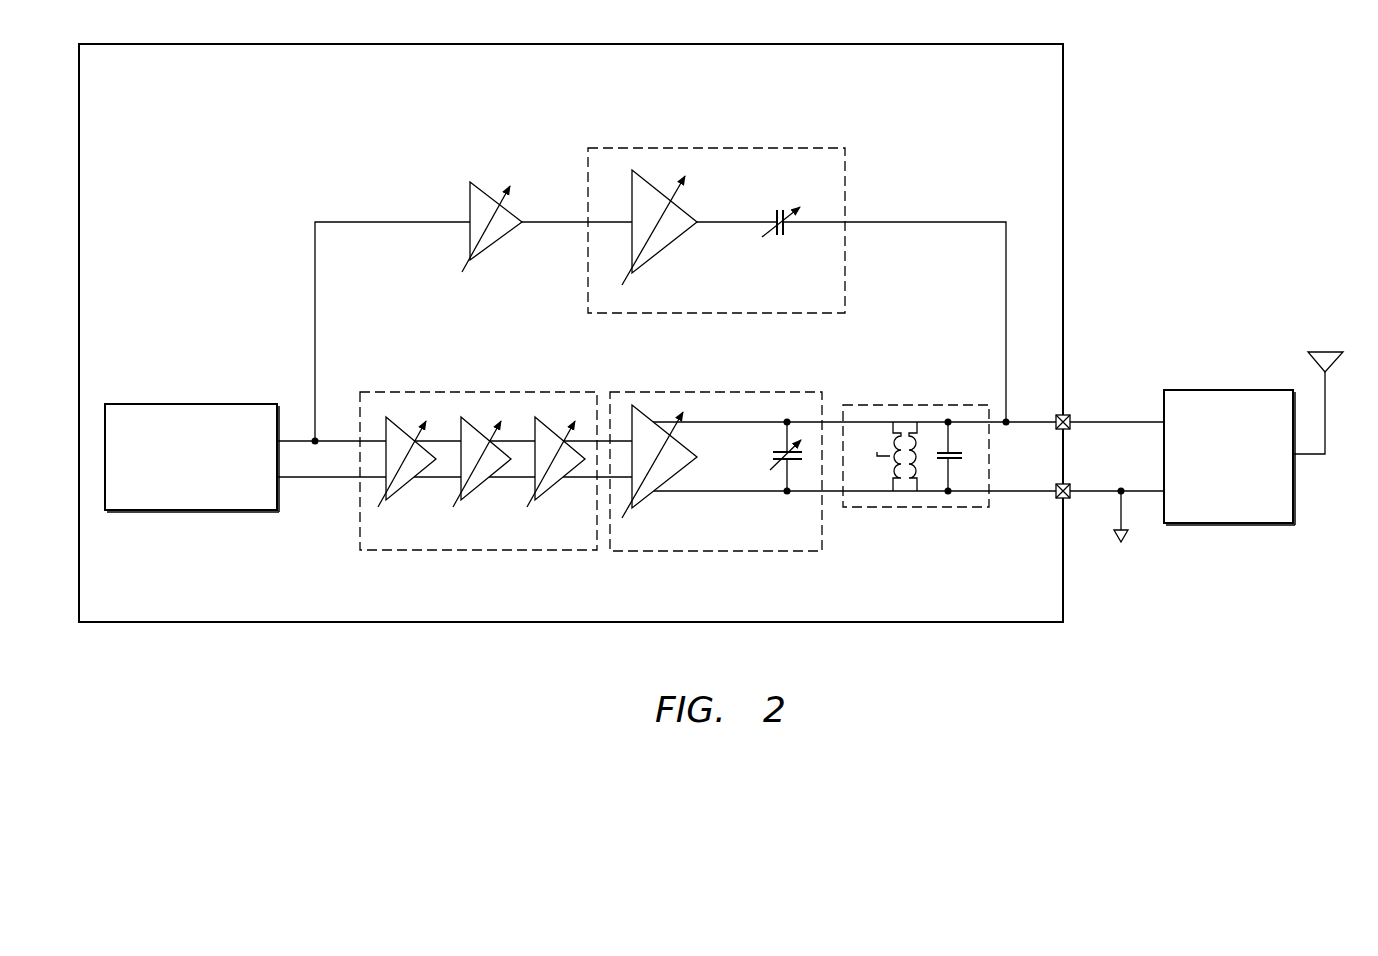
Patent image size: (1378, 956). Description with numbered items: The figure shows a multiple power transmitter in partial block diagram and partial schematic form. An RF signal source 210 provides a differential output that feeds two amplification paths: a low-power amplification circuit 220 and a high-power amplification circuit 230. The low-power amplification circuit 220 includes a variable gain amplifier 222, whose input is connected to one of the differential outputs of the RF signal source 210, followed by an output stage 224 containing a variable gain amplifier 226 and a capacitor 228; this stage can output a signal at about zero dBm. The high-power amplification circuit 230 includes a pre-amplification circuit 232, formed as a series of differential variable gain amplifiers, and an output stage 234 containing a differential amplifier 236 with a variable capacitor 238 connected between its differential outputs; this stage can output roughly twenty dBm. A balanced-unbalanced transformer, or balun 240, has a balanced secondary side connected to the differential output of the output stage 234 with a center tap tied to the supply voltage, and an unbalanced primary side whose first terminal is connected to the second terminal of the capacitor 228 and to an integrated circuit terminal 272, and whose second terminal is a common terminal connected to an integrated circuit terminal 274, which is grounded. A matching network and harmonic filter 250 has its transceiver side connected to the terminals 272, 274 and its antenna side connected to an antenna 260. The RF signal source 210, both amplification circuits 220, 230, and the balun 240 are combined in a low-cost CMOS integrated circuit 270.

The RF signal source 210 is at (190, 404).
The low-power amplification circuit 220 is at (396, 162).
The variable gain amplifier 222 is at (487, 192).
The output stage 224 is at (760, 148).
The variable gain amplifier 226 is at (673, 253).
The capacitor 228 is at (787, 228).
The high-power amplification circuit 230 is at (295, 344).
The pre-amplification circuit 232 is at (468, 392).
The output stage 234 is at (652, 392).
The amplifier 236 is at (650, 493).
The variable capacitor 238 is at (775, 448).
The balanced-unbalanced transformer (balun) 240 is at (910, 405).
The matching network and harmonic filter 250 is at (1205, 390).
The antenna 260 is at (1327, 410).
The integrated circuit 270 is at (1066, 92).
The integrated circuit terminal 272 is at (1058, 414).
The integrated circuit terminal 274 is at (1060, 498).